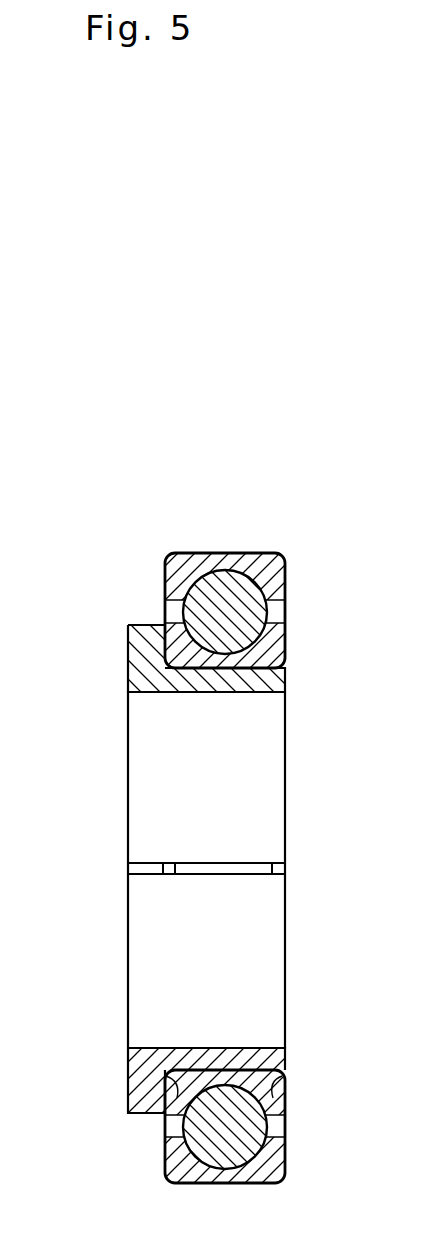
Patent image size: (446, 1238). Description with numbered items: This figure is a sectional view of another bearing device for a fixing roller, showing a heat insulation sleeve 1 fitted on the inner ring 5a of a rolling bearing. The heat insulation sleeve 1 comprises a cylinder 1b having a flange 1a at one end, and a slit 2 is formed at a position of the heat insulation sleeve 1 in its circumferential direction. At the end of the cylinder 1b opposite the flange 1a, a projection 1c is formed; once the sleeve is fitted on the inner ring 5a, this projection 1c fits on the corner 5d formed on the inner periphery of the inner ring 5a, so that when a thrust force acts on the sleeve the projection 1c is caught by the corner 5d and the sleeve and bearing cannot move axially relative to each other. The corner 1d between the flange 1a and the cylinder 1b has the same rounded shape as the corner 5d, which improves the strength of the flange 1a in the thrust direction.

The heat insulation sleeve 1 is at (138, 1062).
The flange 1a is at (142, 1080).
The cylinder 1b is at (237, 1060).
The projection 1c is at (285, 664).
The corner 1d is at (164, 662).
The slit 2 is at (135, 870).
The inner ring 5a is at (283, 1102).
The corner 5d is at (168, 1098).